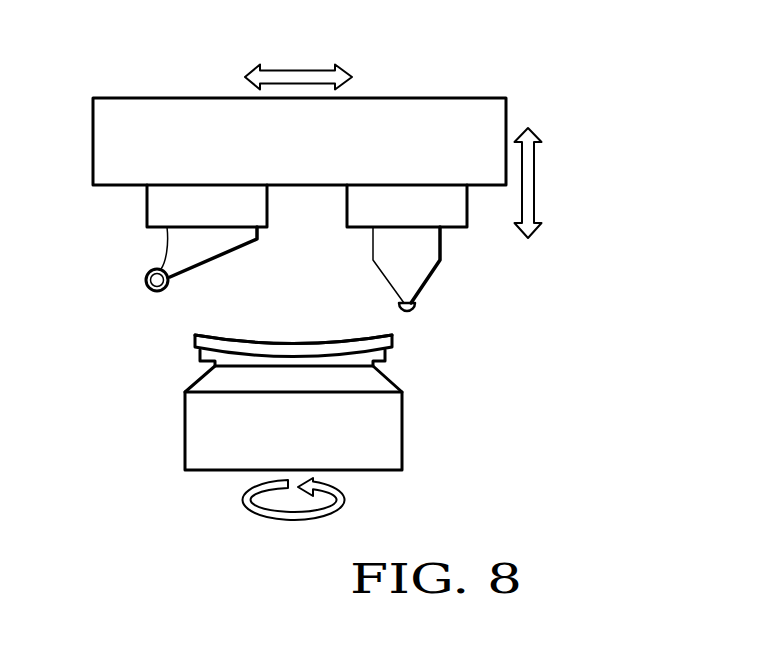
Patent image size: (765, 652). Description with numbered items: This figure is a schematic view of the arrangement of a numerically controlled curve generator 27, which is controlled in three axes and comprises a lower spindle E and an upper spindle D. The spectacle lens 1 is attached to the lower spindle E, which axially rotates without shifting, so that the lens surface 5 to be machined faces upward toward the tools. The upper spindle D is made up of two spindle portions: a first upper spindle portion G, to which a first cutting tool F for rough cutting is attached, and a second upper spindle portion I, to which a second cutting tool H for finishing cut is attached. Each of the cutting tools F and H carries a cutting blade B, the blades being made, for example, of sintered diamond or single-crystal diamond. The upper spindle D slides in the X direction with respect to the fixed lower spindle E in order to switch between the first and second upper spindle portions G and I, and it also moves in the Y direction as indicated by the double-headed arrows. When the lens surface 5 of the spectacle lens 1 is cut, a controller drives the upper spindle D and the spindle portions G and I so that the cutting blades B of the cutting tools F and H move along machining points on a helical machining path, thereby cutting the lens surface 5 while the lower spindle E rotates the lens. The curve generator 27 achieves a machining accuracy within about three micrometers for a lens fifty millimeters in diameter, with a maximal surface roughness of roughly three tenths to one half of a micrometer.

The curve generator 27 is at (463, 64).
The upper spindle D is at (93, 139).
The first upper spindle portion G is at (255, 210).
The second upper spindle portion I is at (457, 212).
The first cutting tool F is at (218, 240).
The second cutting tool H is at (420, 268).
The cutting blade B is at (155, 293).
The lens surface to be machined 5 is at (222, 333).
The spectacle lens 1 is at (284, 326).
The lower spindle E is at (392, 428).